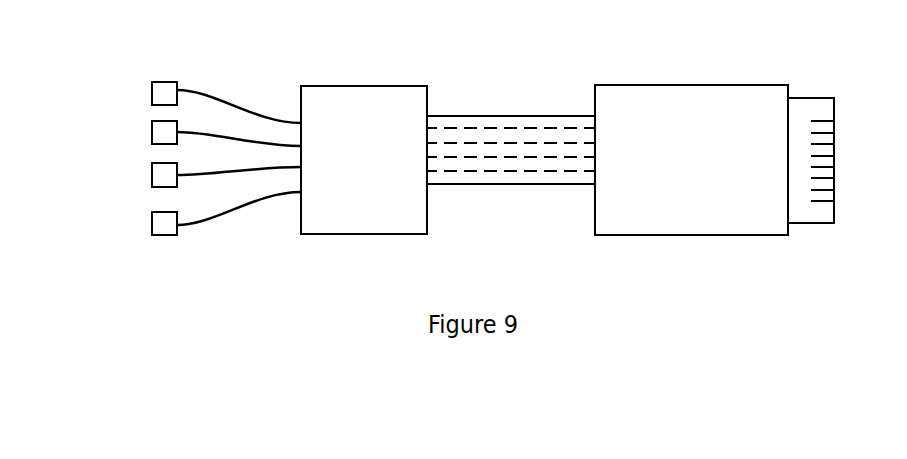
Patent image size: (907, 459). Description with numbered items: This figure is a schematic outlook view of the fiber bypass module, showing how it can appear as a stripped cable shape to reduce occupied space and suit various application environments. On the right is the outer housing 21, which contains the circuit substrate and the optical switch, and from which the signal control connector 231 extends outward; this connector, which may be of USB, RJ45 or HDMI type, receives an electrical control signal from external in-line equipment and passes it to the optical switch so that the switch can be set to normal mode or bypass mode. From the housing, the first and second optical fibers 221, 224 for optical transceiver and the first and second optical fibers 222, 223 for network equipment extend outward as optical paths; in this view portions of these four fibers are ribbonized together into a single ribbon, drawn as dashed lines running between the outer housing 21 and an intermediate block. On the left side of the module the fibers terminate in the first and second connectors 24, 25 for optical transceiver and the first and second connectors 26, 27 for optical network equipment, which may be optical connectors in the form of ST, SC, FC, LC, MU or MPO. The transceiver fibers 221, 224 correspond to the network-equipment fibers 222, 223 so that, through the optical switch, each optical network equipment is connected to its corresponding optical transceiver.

The outer housing 21 is at (782, 98).
The signal control connector 231 is at (802, 210).
The first connector for optical transceiver 24 is at (152, 91).
The second connector for optical transceiver 25 is at (152, 221).
The first connector for optical network equipment 26 is at (152, 132).
The second connector for optical network equipment 27 is at (152, 173).
The first optical fiber for optical transceiver 221 is at (430, 127).
The first optical fiber for network equipment 222 is at (486, 143).
The second optical fiber for network equipment 223 is at (480, 157).
The second optical fiber for optical transceiver 224 is at (443, 171).